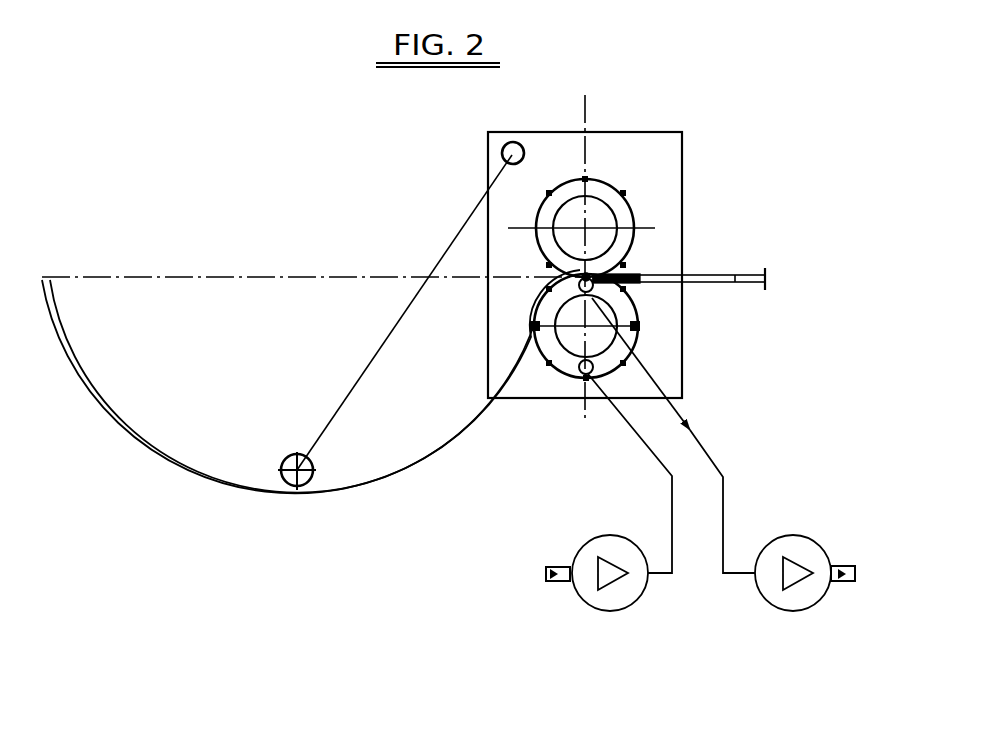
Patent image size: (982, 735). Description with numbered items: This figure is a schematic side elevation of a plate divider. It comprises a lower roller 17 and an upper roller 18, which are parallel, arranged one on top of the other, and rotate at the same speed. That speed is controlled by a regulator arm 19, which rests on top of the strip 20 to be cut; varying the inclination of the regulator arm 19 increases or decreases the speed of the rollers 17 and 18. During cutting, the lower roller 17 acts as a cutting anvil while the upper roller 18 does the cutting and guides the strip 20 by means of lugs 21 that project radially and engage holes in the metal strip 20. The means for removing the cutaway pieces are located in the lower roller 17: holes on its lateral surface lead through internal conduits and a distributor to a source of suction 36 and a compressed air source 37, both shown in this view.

The lower roller 17 is at (568, 343).
The upper roller 18 is at (628, 208).
The regulator arm 19 is at (445, 252).
The strip 20 is at (217, 482).
The lugs 21 is at (640, 327).
The source of suction 36 is at (790, 597).
The compressed air source 37 is at (598, 590).